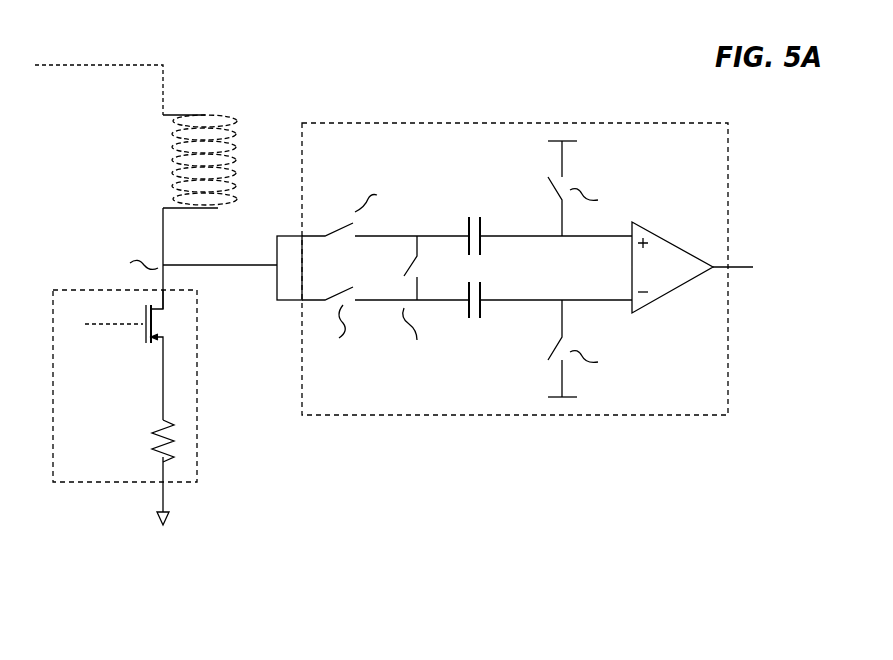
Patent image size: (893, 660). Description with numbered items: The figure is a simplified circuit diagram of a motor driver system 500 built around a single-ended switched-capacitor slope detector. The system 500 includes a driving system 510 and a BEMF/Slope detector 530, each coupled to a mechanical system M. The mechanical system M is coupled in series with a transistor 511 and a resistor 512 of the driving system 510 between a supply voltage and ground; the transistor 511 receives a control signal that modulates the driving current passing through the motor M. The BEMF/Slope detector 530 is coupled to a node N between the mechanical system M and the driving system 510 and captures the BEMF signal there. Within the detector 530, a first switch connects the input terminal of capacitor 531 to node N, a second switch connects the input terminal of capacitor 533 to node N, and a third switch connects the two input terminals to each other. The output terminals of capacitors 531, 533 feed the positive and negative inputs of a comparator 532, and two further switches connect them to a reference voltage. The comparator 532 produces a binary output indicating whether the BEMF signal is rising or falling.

The motor driver system 500 is at (792, 100).
The driving system 510 is at (152, 453).
The transistor 511 is at (190, 319).
The resistor 512 is at (207, 441).
The BEMF/Slope detector 530 is at (527, 384).
The capacitor 531 is at (480, 333).
The comparator 532 is at (692, 284).
The capacitor 533 is at (477, 207).